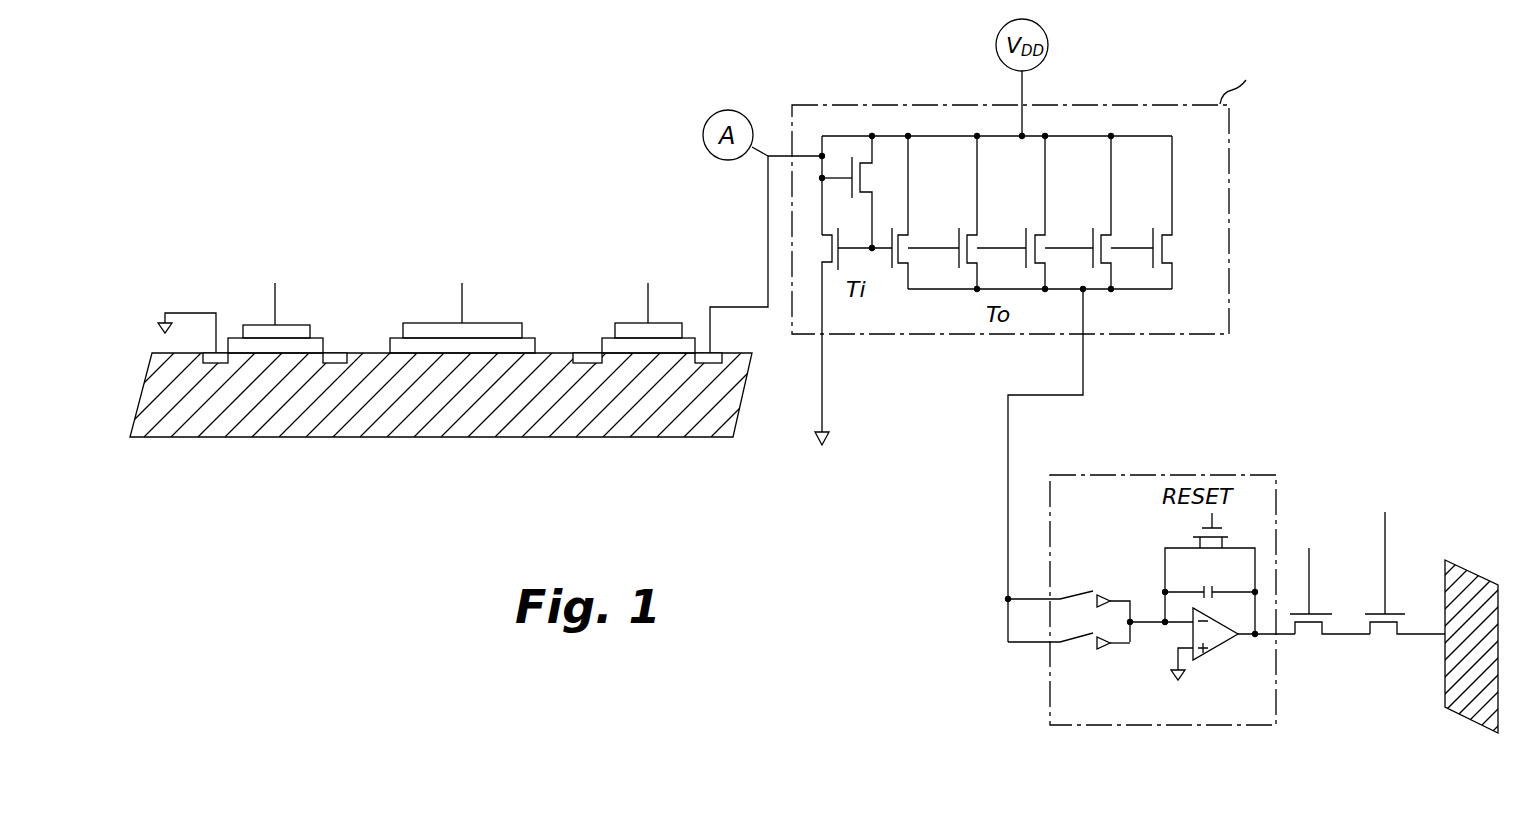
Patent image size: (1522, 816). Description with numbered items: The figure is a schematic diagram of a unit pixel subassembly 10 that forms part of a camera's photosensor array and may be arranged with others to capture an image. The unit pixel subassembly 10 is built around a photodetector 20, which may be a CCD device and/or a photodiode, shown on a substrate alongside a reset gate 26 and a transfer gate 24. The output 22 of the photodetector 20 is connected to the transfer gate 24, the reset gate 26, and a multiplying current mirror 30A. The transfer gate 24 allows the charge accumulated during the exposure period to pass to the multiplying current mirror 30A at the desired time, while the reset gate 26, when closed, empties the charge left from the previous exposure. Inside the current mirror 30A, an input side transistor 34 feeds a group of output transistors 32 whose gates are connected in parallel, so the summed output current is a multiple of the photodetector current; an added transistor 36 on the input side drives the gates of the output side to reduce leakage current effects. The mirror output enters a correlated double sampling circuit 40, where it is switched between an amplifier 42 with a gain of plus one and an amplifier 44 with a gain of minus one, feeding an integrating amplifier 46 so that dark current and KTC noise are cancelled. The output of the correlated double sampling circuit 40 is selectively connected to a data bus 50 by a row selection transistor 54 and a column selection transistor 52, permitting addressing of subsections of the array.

The unit pixel subassembly 10 is at (460, 150).
The photodetector 20 is at (441, 323).
The output 22 is at (527, 437).
The transfer gate 24 is at (626, 321).
The reset gate 26 is at (298, 323).
The multiplying current mirror 30A is at (1229, 160).
The transistors 32 is at (905, 238).
The input side transistor 34 is at (828, 268).
The transistor 36 is at (862, 158).
The correlated double sampling circuit 40 is at (1258, 475).
The amplifier 42 is at (1097, 598).
The amplifier 44 is at (1097, 646).
The integrating amplifier 46 is at (1218, 650).
The data bus 50 is at (1473, 567).
The column selection transistor 52 is at (1375, 634).
The row selection transistor 54 is at (1300, 634).